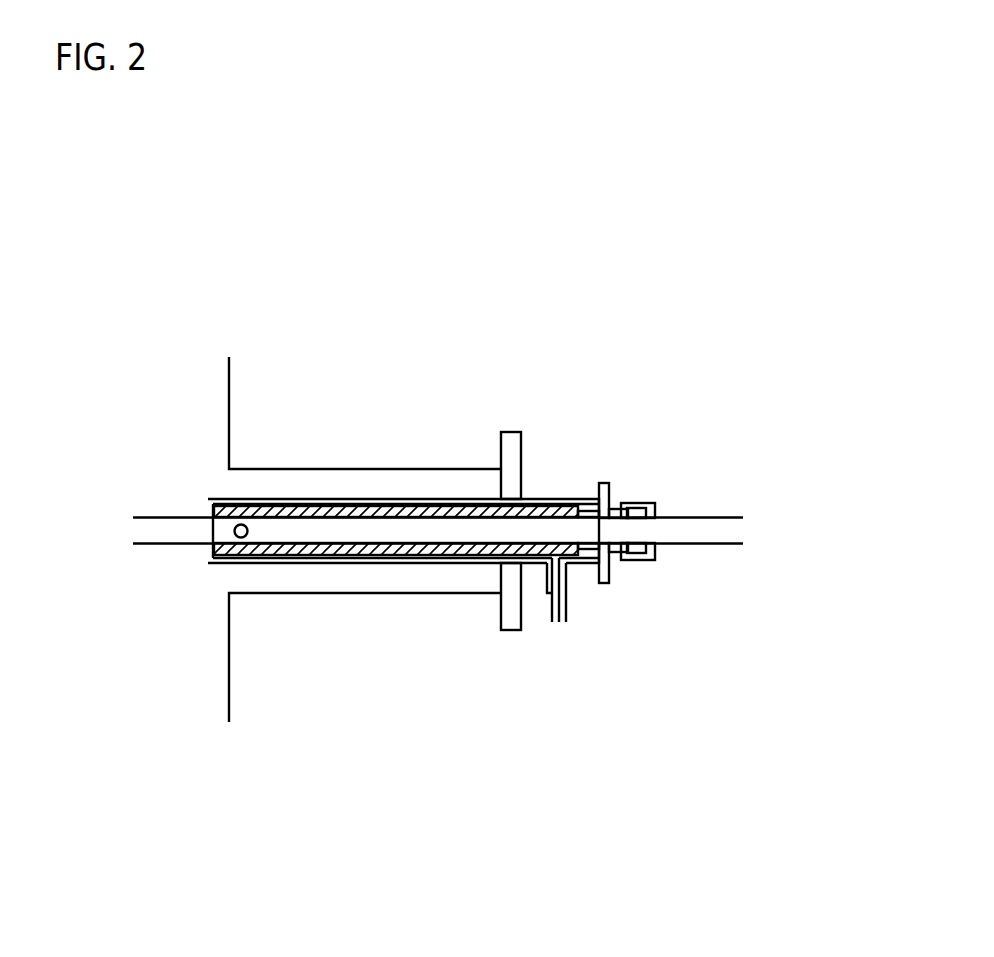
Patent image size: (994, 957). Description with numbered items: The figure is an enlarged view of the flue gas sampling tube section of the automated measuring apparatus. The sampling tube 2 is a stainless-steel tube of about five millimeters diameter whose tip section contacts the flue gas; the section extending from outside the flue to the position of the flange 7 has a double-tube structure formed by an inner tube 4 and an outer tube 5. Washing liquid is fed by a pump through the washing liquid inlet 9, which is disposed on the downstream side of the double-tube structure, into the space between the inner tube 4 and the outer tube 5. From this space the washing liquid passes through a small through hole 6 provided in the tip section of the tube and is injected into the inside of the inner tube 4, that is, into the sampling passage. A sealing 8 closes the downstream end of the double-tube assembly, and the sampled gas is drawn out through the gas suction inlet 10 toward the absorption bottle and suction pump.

The sampling tube 2 is at (169, 509).
The inner tube 4 is at (267, 556).
The outer tube 5 is at (440, 488).
The small through hole 6 is at (241, 524).
The flange 7 is at (516, 420).
The sealing 8 is at (646, 499).
The washing liquid inlet 9 is at (544, 606).
The gas suction inlet 10 is at (695, 558).